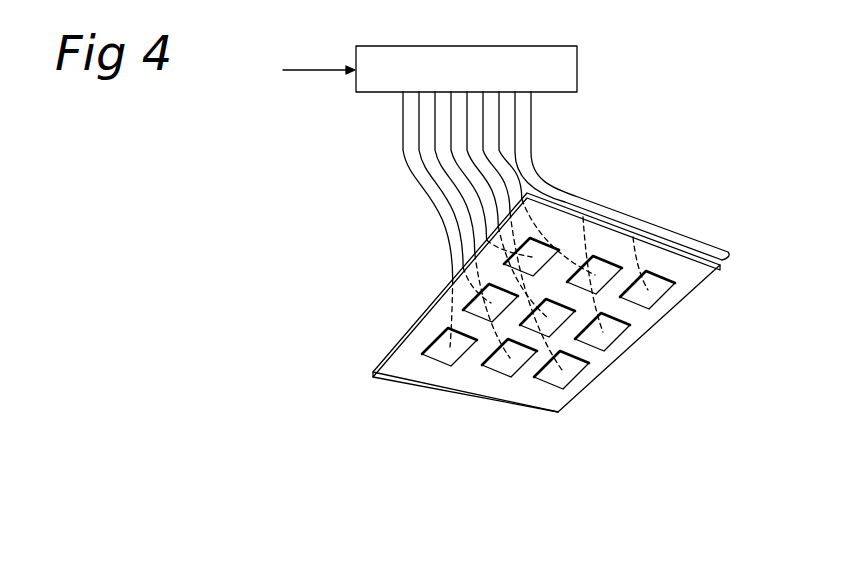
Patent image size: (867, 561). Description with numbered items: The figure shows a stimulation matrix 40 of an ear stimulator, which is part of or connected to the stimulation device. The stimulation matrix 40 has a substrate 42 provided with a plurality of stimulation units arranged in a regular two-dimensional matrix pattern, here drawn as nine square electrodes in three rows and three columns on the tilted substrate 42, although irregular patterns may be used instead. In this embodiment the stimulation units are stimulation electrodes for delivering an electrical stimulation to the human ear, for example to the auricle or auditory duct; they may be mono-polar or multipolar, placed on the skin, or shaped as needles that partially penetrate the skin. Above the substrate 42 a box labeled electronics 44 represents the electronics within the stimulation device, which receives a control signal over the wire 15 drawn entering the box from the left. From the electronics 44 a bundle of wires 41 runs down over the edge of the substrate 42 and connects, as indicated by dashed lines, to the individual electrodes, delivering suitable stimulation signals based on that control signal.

The wire 15 is at (307, 70).
The stimulation matrix 40 is at (677, 206).
The wires 41 is at (533, 150).
The substrate 42 is at (414, 320).
The electronics 44 is at (577, 66).